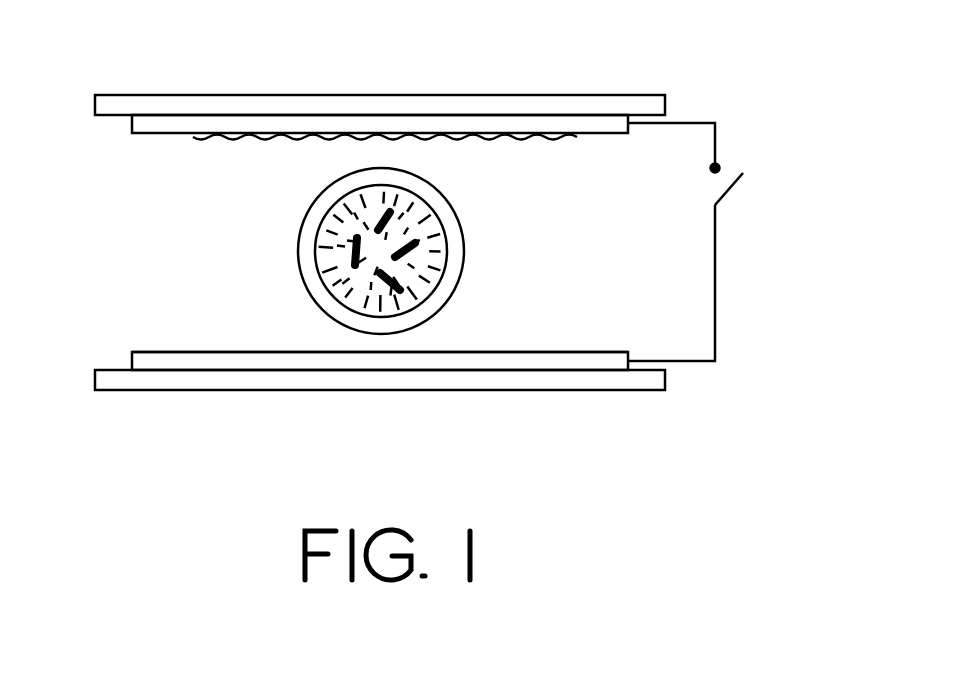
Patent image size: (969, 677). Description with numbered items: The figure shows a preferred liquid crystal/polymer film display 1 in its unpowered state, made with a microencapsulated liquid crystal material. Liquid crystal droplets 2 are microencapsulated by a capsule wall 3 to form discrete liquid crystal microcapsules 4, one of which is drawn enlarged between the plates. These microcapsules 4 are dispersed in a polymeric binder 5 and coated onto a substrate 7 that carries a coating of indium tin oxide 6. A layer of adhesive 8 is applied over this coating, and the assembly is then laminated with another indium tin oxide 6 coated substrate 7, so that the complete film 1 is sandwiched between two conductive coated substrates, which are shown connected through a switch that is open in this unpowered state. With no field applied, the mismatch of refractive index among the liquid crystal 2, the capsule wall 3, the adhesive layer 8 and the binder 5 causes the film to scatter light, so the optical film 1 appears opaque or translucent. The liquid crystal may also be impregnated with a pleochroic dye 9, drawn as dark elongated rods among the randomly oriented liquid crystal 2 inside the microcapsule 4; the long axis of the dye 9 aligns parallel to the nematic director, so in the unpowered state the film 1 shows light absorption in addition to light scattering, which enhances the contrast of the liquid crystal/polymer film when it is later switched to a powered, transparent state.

The liquid crystal/polymer film display 1 is at (403, 88).
The liquid crystal droplets 2 is at (420, 210).
The capsule wall 3 is at (452, 281).
The liquid crystal microcapsules 4 is at (387, 251).
The polymeric binder 5 is at (565, 322).
The indium tin oxide 6 is at (417, 362).
The substrate 7 is at (225, 380).
The adhesive layer 8 is at (265, 138).
The pleochroic dye 9 is at (335, 257).